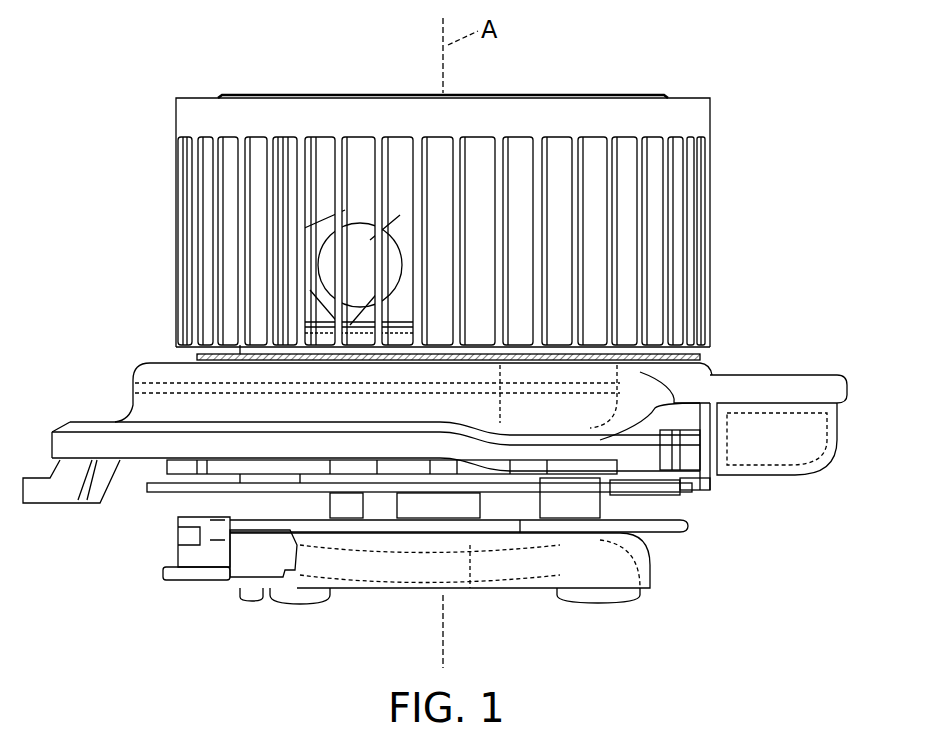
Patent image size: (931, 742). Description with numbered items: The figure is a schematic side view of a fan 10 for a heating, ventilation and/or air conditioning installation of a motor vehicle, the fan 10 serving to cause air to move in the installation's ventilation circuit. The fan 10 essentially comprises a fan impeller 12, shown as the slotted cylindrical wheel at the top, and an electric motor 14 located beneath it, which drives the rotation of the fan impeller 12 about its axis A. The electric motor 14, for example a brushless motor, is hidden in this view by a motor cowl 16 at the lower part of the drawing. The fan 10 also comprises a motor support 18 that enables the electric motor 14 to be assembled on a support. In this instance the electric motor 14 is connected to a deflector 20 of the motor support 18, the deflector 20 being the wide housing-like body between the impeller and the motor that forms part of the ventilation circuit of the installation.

The fan 10 is at (137, 105).
The fan impeller 12 is at (687, 118).
The electric motor 14 is at (620, 580).
The motor cowl 16 is at (273, 575).
The motor support 18 is at (678, 469).
The deflector 20 is at (637, 382).